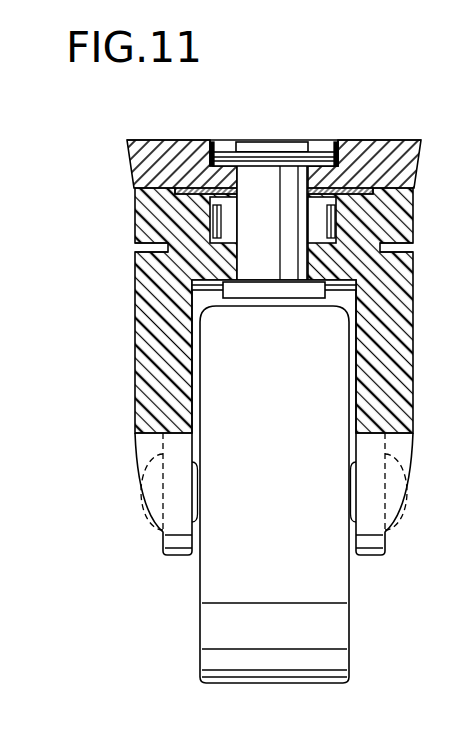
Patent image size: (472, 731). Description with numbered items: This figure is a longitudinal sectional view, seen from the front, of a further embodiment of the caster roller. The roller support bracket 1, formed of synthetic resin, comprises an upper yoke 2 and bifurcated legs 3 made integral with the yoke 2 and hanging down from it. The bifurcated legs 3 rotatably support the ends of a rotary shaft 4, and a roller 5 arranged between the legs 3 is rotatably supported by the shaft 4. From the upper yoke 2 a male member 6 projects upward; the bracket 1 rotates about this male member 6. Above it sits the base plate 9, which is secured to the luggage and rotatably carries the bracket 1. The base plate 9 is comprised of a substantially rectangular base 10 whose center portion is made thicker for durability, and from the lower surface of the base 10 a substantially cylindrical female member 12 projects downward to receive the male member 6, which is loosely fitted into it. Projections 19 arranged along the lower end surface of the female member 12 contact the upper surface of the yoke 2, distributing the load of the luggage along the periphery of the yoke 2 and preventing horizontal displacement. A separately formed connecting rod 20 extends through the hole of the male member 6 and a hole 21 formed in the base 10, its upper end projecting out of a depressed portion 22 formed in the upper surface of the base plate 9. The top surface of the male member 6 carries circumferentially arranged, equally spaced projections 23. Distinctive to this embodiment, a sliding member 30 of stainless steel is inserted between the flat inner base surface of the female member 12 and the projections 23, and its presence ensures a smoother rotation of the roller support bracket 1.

The roller support bracket 1 is at (118, 321).
The upper yoke 2 is at (196, 266).
The bifurcated legs 3 is at (165, 368).
The rotary shaft 4 is at (145, 505).
The roller 5 is at (228, 624).
The male member 6 is at (188, 216).
The base plate 9 is at (114, 142).
The base 10 is at (418, 146).
The female member 12 is at (392, 205).
The projections 19 is at (392, 248).
The connecting rod 20 is at (270, 182).
The hole 21 is at (308, 180).
The depressed portion 22 is at (224, 148).
The projections 23 is at (192, 185).
The sliding member 30 is at (347, 182).